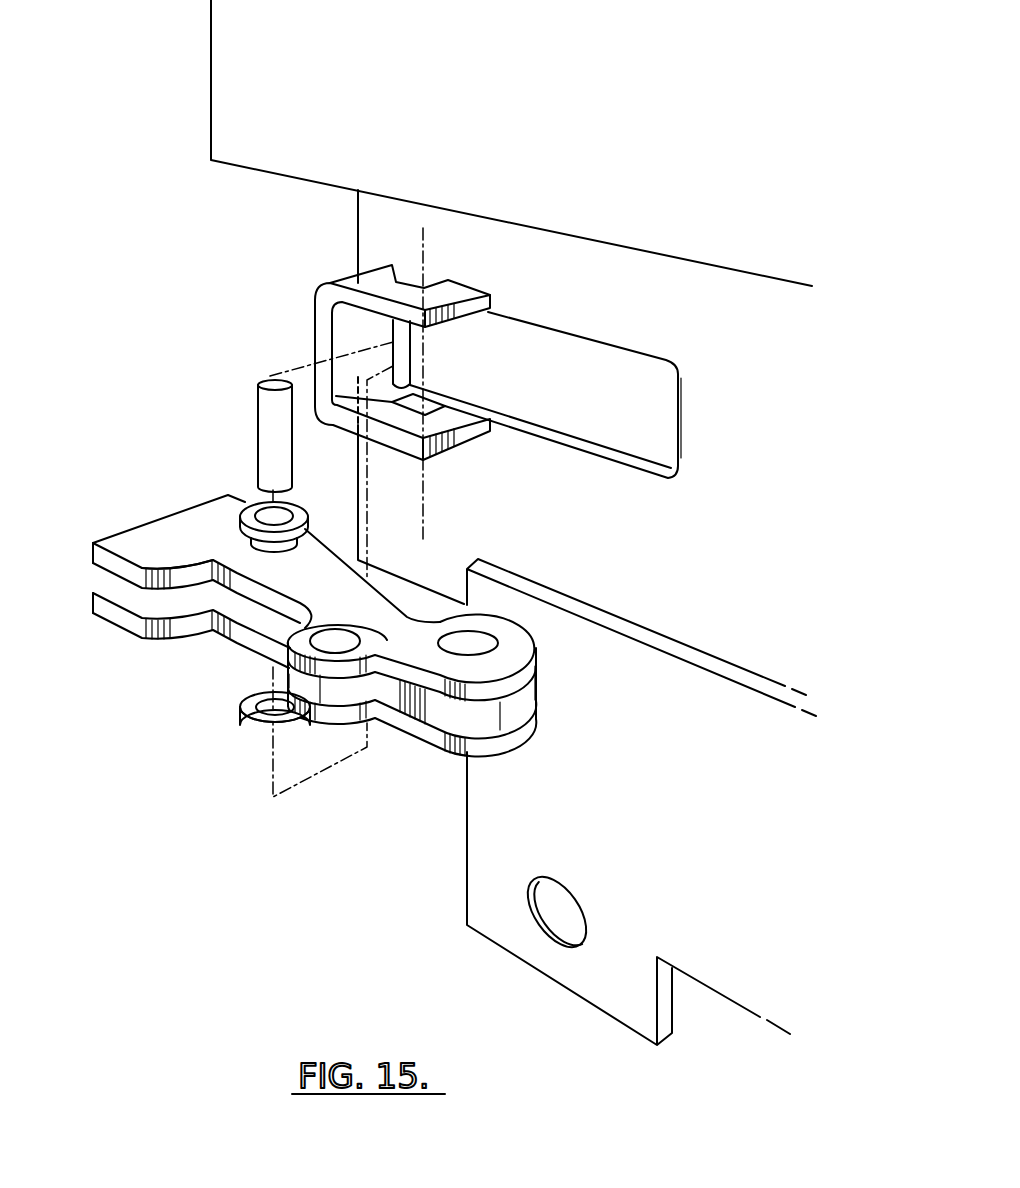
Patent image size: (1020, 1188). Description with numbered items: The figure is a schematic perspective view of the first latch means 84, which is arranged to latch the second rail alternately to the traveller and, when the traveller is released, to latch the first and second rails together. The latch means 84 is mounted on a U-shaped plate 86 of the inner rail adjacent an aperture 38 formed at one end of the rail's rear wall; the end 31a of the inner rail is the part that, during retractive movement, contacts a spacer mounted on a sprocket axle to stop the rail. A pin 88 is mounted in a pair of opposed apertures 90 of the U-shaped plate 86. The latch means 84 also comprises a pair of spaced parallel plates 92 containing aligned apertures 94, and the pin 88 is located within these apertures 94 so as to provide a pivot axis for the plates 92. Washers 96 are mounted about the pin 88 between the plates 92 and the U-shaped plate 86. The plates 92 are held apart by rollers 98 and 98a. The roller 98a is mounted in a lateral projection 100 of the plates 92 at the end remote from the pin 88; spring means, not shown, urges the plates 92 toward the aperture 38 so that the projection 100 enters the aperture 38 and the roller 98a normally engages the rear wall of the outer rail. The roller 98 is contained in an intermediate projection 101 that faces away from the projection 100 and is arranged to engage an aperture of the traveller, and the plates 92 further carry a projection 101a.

The end of inner rail 31a is at (378, 232).
The aperture 38 is at (575, 358).
The U-shaped plate 86 is at (468, 434).
The opposed apertures 90 is at (431, 406).
The pin 88 is at (258, 402).
The washers 96 is at (212, 505).
The latch means 84 is at (158, 527).
The aligned apertures 94 is at (292, 549).
The intermediate projection 101 is at (283, 648).
The projection 101a is at (175, 557).
The spaced parallel plates 92 is at (408, 728).
The roller 98 is at (332, 697).
The roller 98a is at (484, 712).
The lateral projection 100 is at (514, 649).